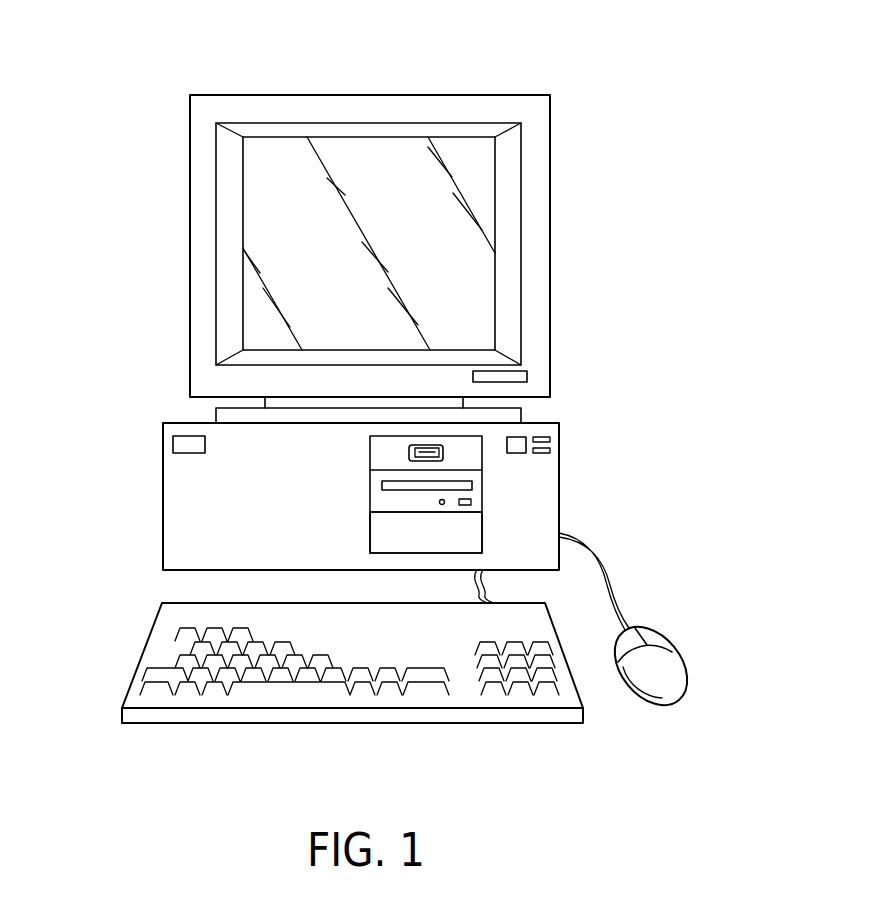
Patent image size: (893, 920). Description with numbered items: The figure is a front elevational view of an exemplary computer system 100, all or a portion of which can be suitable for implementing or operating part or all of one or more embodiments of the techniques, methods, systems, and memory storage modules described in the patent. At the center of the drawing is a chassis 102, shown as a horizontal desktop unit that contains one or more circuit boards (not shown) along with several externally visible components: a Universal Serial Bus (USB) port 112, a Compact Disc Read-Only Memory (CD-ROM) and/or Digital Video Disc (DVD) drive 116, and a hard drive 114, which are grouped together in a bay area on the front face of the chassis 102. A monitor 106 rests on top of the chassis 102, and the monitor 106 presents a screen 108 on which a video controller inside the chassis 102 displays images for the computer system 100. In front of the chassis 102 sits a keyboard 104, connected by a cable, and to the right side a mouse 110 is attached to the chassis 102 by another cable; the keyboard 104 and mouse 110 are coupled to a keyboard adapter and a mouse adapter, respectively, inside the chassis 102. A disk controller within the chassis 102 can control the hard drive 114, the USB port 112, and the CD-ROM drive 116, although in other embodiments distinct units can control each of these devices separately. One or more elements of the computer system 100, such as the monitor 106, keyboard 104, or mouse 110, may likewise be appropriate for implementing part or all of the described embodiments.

The computer system 100 is at (549, 62).
The chassis 102 is at (163, 497).
The keyboard 104 is at (145, 650).
The monitor 106 is at (263, 95).
The screen 108 is at (287, 249).
The mouse 110 is at (672, 658).
The Universal Serial Bus (USB) port 112 is at (447, 450).
The hard drive 114 is at (474, 533).
The Compact Disc Read-Only Memory (CD-ROM) and/or Digital Video Disc (DVD) drive 116 is at (475, 492).